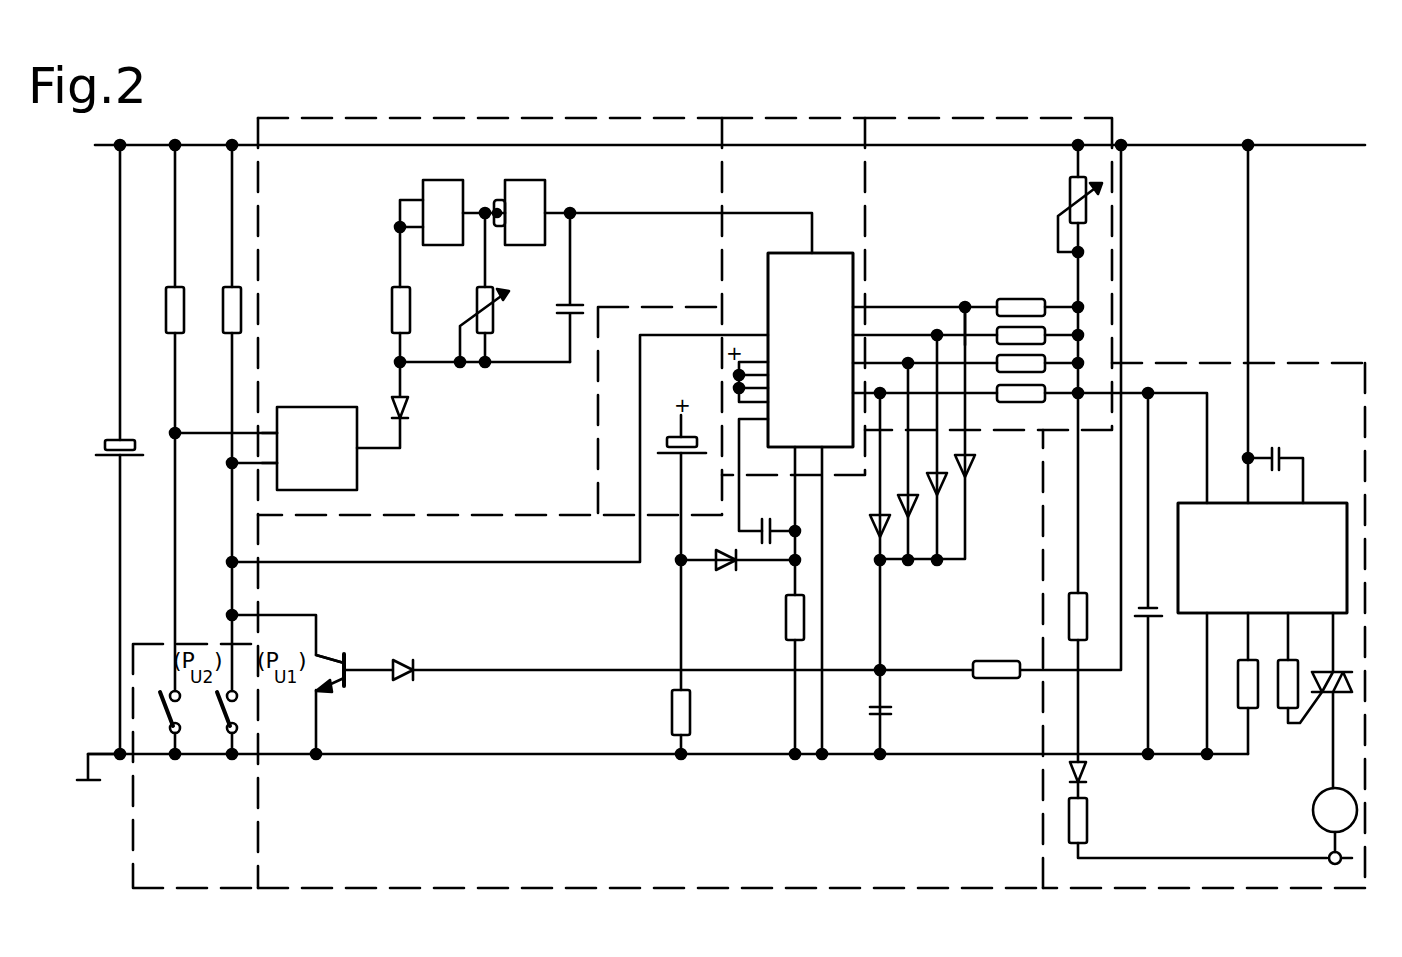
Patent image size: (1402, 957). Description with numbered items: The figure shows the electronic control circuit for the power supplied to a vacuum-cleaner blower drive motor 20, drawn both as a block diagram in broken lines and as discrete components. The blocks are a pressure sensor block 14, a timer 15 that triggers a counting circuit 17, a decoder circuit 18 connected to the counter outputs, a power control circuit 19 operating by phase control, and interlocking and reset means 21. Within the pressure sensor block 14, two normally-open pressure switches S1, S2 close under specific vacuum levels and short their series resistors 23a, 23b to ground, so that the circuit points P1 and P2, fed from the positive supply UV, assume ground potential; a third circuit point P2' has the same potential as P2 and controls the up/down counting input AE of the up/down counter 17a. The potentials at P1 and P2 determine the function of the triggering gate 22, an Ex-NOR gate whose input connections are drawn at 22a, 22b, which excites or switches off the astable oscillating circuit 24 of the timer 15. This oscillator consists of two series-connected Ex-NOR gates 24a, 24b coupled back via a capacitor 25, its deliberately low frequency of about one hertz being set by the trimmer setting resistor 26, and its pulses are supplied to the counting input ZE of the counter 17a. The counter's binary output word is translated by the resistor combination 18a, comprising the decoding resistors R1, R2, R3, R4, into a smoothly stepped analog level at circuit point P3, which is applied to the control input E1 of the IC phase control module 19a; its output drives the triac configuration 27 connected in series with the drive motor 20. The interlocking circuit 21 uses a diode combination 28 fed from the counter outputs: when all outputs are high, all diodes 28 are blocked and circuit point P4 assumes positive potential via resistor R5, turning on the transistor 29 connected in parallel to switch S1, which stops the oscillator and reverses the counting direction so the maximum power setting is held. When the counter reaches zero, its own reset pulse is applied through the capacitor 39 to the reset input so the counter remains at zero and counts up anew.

The pressure sensor block 14 is at (165, 888).
The timer 15 is at (466, 118).
The counting circuit 17 is at (753, 118).
The up/down counter 17a is at (838, 278).
The decoder circuit 18 is at (957, 118).
The resistor combination 18a is at (976, 340).
The power control circuit 19 is at (1280, 363).
The IC phase control module 19a is at (1305, 525).
The drive motor 20 is at (1313, 814).
The interlocking and reset means 21 is at (583, 888).
The triggering gate 22 is at (321, 425).
The input of logic block 22a is at (266, 466).
The input of logic block 22b is at (268, 430).
The series resistor 23a is at (229, 312).
The series resistor 23b is at (172, 312).
The astable oscillating circuit 24 is at (394, 263).
The Ex-NOR gate 24a is at (441, 190).
The Ex-NOR gate 24b is at (533, 180).
The capacitor 25 is at (576, 303).
The setting resistor 26 is at (491, 318).
The triac configuration 27 is at (1307, 720).
The diode combination 28 is at (944, 543).
The transistor 29 is at (342, 655).
The capacitor 39 is at (786, 514).
The decoding resistor R1 is at (1035, 305).
The decoding resistor R2 is at (1012, 332).
The decoding resistor R3 is at (1010, 362).
The decoding resistor R4 is at (1010, 396).
The resistor R5 is at (980, 677).
The circuit point P1 is at (175, 432).
The circuit point P2 is at (229, 492).
The circuit point P2' is at (474, 474).
The circuit point P3 is at (1081, 393).
The circuit point P4 is at (883, 668).
The pressure switch S1 is at (212, 718).
The pressure switch S2 is at (156, 718).
The control input E1 is at (1205, 500).
The counting input ZE is at (815, 253).
The up/down counting input AE is at (680, 408).
The supply voltage UV is at (68, 156).